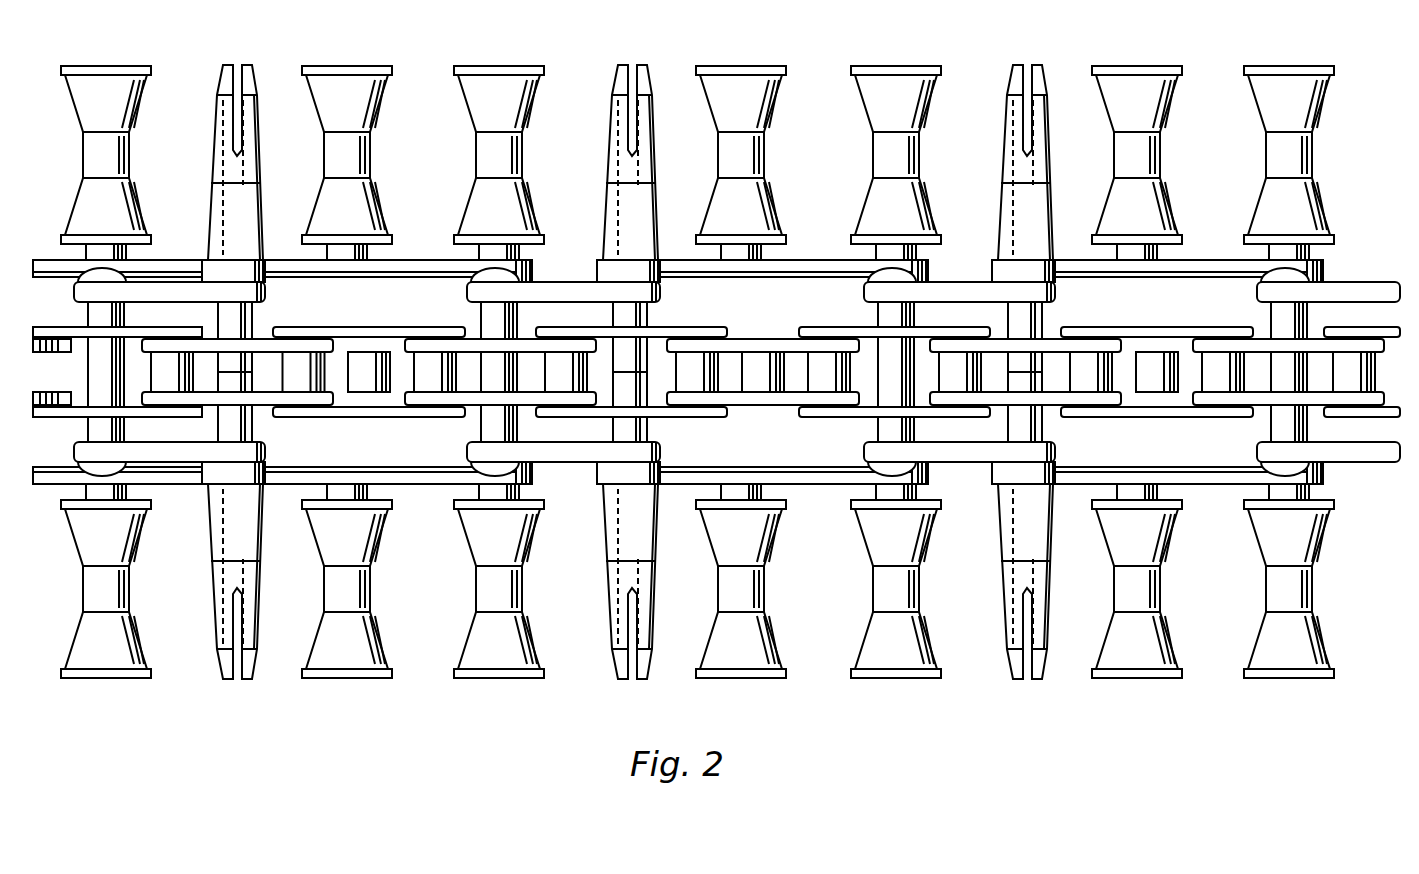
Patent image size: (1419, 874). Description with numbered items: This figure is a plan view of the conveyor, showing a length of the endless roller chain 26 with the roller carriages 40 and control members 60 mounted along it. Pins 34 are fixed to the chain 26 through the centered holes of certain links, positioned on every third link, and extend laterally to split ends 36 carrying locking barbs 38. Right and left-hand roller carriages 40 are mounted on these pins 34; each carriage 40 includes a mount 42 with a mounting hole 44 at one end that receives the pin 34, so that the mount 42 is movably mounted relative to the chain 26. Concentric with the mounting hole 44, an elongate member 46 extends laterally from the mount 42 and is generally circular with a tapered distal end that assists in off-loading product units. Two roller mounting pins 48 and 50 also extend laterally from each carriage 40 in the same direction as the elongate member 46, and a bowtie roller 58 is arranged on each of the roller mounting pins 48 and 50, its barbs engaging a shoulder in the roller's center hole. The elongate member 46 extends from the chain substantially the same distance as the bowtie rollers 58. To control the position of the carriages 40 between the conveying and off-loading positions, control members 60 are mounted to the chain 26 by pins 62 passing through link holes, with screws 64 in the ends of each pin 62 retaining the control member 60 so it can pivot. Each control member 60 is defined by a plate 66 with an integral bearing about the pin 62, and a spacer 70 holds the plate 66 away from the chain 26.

The endless roller chain 26 is at (716, 367).
The pin 34 is at (716, 388).
The split end 36 is at (633, 670).
The locking barb 38 is at (630, 393).
The roller carriage 40 is at (678, 369).
The mount 42 is at (827, 262).
The mounting hole 44 is at (630, 393).
The elongate member 46 is at (630, 393).
The roller mounting pin 48 is at (737, 470).
The roller mounting pin 50 is at (918, 491).
The bowtie roller 58 is at (752, 66).
The control member 60 is at (737, 388).
The pin 62 is at (452, 368).
The screw 64 is at (468, 278).
The plate 66 is at (737, 375).
The spacer 70 is at (475, 430).